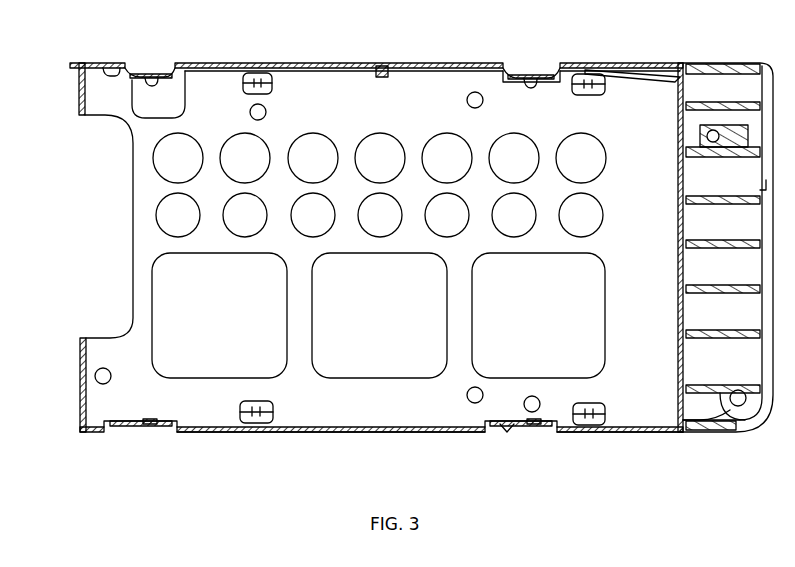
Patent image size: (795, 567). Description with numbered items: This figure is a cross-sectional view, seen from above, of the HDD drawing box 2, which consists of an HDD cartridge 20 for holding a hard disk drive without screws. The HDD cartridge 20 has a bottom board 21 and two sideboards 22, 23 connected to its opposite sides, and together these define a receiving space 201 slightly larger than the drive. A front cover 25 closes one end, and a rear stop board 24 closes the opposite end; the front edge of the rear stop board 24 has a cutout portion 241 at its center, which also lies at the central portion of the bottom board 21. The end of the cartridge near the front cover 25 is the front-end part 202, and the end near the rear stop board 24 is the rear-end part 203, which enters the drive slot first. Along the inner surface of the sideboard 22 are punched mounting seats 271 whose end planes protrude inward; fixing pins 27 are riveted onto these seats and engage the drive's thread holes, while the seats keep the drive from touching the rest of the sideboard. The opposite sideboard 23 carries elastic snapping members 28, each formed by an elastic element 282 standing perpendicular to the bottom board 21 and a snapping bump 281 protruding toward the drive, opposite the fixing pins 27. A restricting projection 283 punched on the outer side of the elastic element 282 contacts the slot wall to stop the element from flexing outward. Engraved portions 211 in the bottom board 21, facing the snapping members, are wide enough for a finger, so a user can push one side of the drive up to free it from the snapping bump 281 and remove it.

The HDD drawing box 2 is at (362, 60).
The HDD cartridge 20 is at (432, 60).
The receiving space 201 is at (318, 95).
The front-end part 202 is at (604, 436).
The rear-end part 203 is at (103, 437).
The bottom board 21 is at (184, 433).
The engraved portions 211 is at (378, 380).
The sideboard 22 is at (268, 72).
The sideboard 23 is at (285, 434).
The rear stop board 24 is at (79, 381).
The cutout portion 241 is at (122, 245).
The front cover 25 is at (700, 66).
The fixing pins 27 is at (150, 69).
The mounting seats 271 is at (137, 66).
The elastic snapping members 28 is at (142, 480).
The snapping bump 281 is at (152, 430).
The elastic element 282 is at (122, 430).
The restricting projection 283 is at (508, 434).